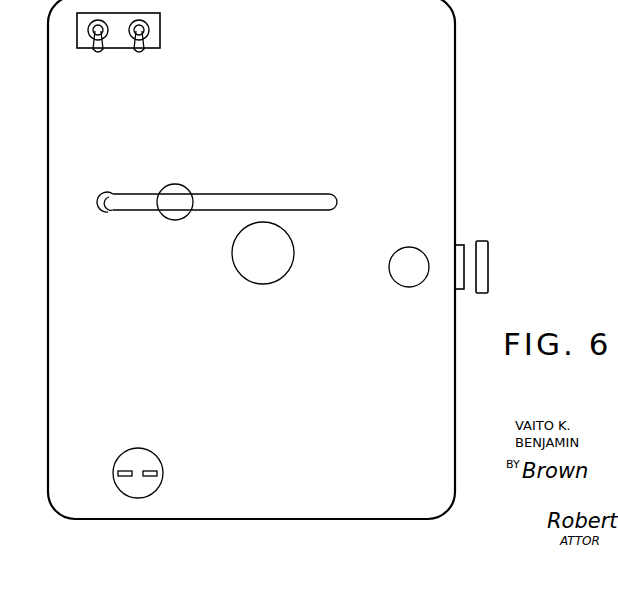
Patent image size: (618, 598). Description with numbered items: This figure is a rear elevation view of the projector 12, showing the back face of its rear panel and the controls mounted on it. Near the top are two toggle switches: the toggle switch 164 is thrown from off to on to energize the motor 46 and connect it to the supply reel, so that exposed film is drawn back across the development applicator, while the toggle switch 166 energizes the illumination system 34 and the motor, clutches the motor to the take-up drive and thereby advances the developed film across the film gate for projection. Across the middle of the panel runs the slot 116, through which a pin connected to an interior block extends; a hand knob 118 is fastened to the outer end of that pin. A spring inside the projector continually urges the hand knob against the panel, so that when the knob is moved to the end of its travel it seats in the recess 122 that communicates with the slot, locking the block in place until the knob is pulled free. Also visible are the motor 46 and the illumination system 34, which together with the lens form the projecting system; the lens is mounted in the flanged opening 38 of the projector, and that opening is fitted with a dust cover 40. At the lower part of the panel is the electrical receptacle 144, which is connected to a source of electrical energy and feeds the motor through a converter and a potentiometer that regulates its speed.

The projector 12 is at (457, 122).
The toggle switch 164 is at (98, 51).
The toggle switch 166 is at (139, 51).
The slot 116 is at (277, 197).
The hand knob 118 is at (171, 220).
The recess 122 is at (117, 212).
The motor 46 is at (249, 277).
The illumination system 34 is at (398, 285).
The flanged opening 38 is at (460, 243).
The dust cover 40 is at (489, 262).
The electrical receptacle 144 is at (156, 455).